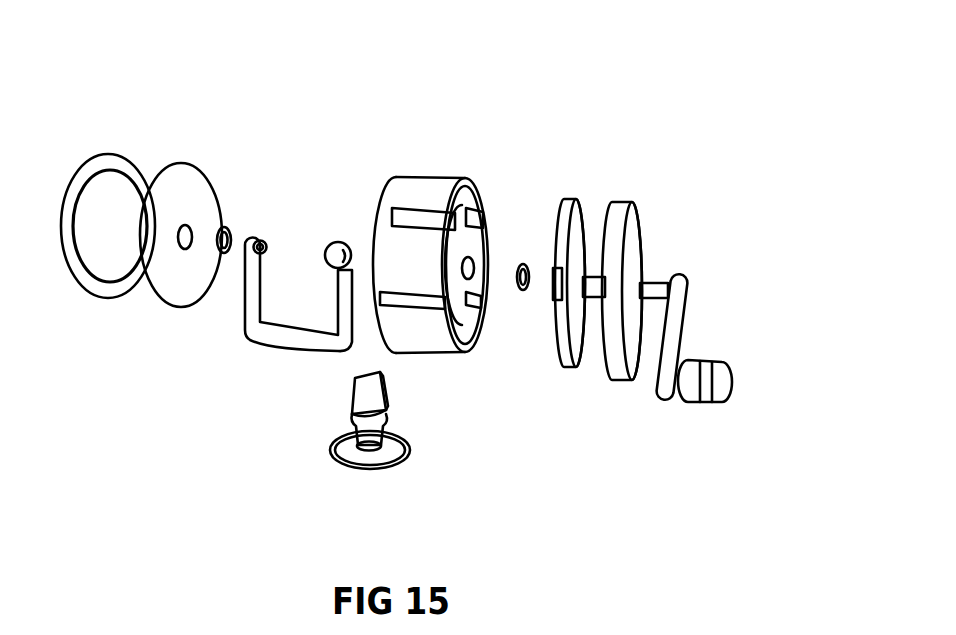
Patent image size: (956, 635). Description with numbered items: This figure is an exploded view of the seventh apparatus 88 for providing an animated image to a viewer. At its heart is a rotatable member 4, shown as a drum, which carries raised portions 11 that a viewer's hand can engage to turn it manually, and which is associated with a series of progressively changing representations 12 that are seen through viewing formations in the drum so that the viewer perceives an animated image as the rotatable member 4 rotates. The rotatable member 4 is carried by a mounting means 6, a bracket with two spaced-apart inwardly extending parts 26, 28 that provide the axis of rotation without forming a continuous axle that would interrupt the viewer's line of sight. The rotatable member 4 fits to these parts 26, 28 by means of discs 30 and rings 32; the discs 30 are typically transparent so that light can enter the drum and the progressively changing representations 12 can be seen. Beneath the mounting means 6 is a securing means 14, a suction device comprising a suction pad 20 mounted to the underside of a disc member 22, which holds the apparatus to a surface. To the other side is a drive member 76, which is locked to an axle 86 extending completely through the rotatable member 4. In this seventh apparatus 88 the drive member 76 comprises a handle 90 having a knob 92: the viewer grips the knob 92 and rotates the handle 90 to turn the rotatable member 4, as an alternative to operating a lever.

The seventh apparatus 88 is at (612, 80).
The disc 30 is at (194, 190).
The ring 32 is at (120, 285).
The inwardly extending part 26 is at (268, 243).
The inwardly extending part 28 is at (330, 240).
The mounting means 6 is at (293, 279).
The raised portion 11 is at (413, 193).
The progressively changing representations 12 is at (488, 232).
The rotatable member 4 is at (455, 244).
The drive member 76 is at (683, 322).
The axle 86 is at (592, 287).
The handle 90 is at (673, 325).
The knob 92 is at (703, 388).
The securing means 14 is at (398, 452).
The suction pad 20 is at (360, 472).
The disc member 22 is at (342, 445).